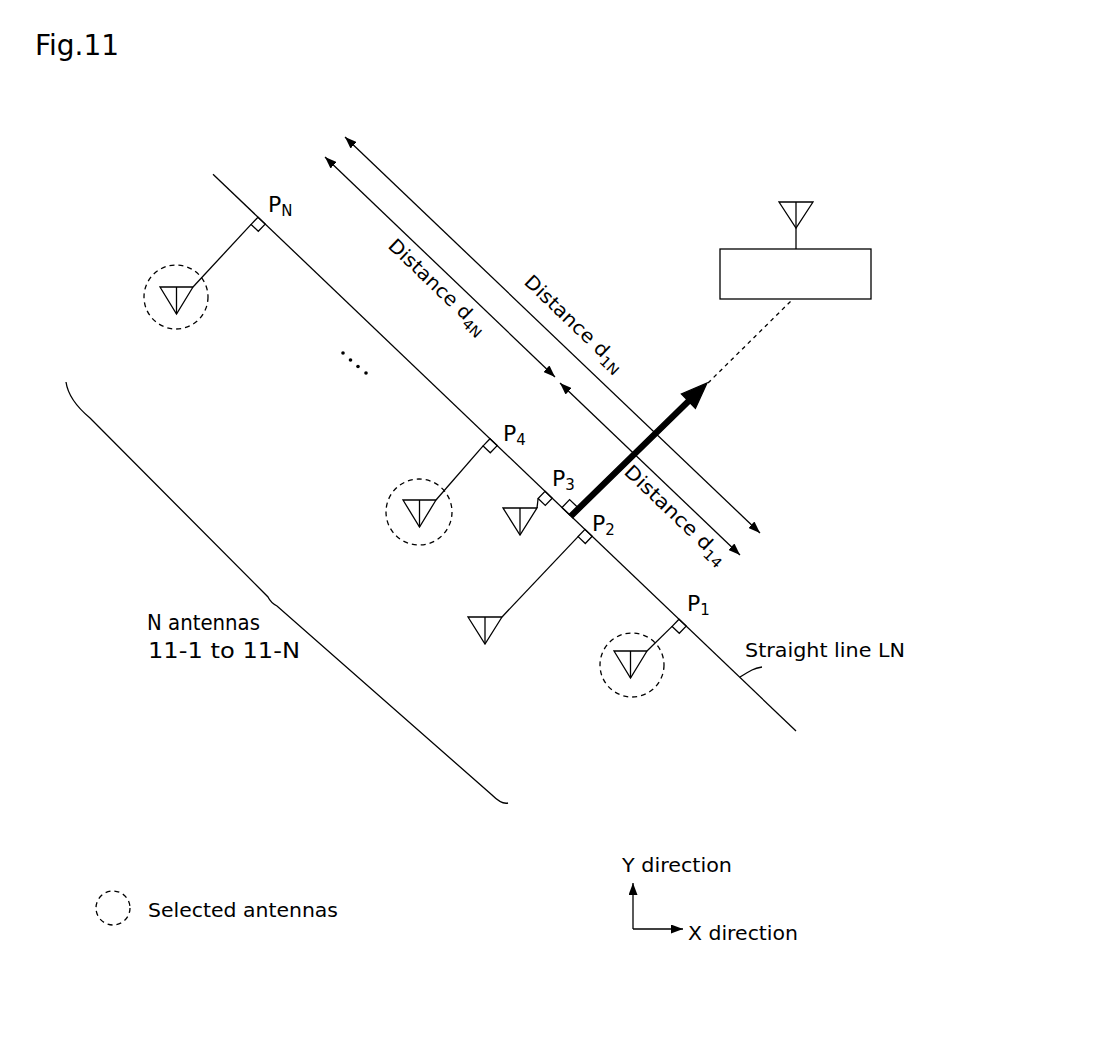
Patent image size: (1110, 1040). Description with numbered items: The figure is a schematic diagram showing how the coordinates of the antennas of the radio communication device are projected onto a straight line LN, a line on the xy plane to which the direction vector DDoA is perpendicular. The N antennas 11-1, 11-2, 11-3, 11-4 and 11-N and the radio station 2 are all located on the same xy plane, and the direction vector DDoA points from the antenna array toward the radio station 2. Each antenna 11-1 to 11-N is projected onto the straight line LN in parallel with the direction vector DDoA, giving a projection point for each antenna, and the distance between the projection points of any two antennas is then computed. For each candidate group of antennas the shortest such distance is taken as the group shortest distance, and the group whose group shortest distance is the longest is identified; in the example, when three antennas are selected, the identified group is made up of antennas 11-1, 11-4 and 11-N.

The radio station 2 is at (837, 247).
The antenna 11-1 is at (617, 670).
The antenna 11-2 is at (483, 640).
The antenna 11-3 is at (510, 525).
The antenna 11-4 is at (410, 520).
The antenna 11-N is at (176, 314).
The direction vector DDoA is at (702, 398).